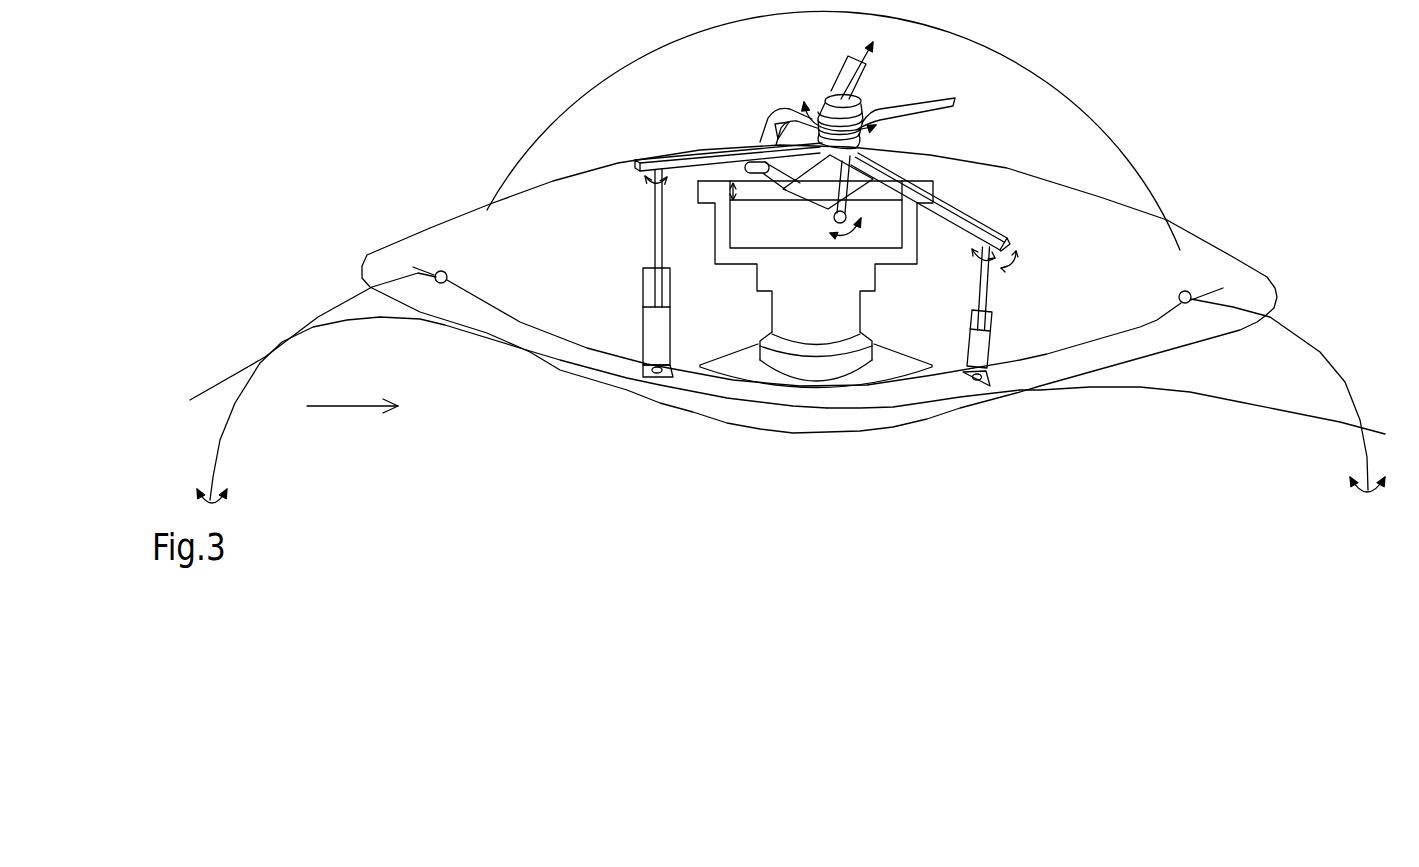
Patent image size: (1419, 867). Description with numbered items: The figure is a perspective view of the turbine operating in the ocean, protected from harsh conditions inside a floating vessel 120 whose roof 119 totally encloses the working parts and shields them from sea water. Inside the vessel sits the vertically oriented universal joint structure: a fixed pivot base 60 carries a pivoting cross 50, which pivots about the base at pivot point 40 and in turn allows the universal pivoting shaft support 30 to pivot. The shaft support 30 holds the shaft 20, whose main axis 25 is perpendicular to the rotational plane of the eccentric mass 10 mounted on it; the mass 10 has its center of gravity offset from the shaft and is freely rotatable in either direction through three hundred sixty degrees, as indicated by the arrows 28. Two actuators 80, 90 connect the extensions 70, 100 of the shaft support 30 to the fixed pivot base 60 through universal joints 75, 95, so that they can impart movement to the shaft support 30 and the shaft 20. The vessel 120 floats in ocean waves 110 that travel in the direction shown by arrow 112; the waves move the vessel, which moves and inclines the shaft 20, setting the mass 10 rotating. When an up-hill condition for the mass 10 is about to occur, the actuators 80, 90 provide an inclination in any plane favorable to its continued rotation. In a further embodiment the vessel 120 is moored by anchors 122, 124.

The eccentric mass 10 is at (913, 95).
The shaft 20 is at (832, 90).
The main axis 25 is at (874, 50).
The arrows 28 is at (872, 140).
The universal pivoting shaft support 30 is at (788, 113).
The pivot point 40 is at (932, 180).
The pivoting cross 50 is at (787, 191).
The fixed pivot base 60 is at (851, 309).
The extension 70 is at (982, 232).
The universal joint 75 is at (975, 252).
The actuator 80 is at (985, 329).
The actuator 90 is at (645, 262).
The universal joint 95 is at (645, 182).
The extension 100 is at (678, 156).
The ocean waves 110 is at (302, 346).
The arrow 112 is at (358, 409).
The roof 119 is at (1077, 107).
The floating vessel 120 is at (1178, 349).
The anchor 122 is at (213, 475).
The anchor 124 is at (1365, 477).